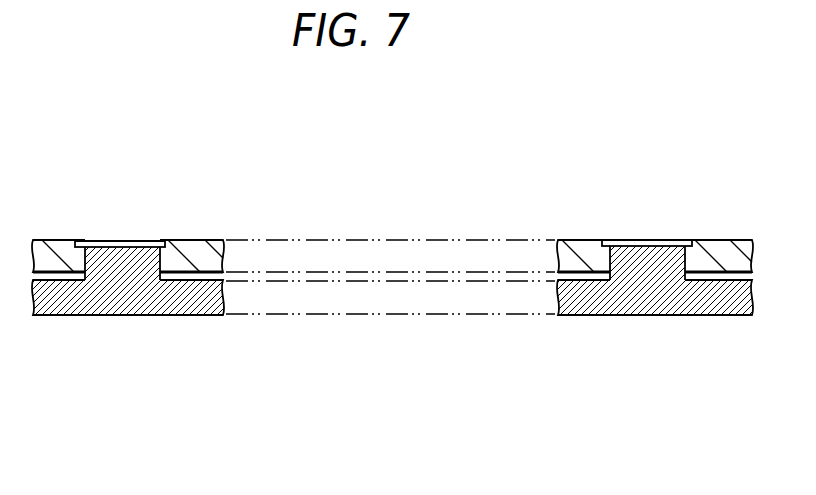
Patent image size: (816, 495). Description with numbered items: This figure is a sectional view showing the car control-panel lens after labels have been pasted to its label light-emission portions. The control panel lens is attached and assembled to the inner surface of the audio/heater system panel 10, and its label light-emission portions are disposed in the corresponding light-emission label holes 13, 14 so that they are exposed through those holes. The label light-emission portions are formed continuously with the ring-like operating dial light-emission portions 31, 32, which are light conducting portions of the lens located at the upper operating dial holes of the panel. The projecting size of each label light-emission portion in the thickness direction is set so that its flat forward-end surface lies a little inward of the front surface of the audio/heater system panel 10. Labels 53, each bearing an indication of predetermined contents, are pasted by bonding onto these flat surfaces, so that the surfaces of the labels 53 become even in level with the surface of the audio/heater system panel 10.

The audio/heater system panel 10 is at (188, 240).
The light-emission label hole 13 is at (662, 276).
The light-emission label hole 14 is at (138, 278).
The operating dial light-emission portion 31 is at (617, 240).
The operating dial light-emission portion 32 is at (93, 240).
The label 53 is at (120, 240).